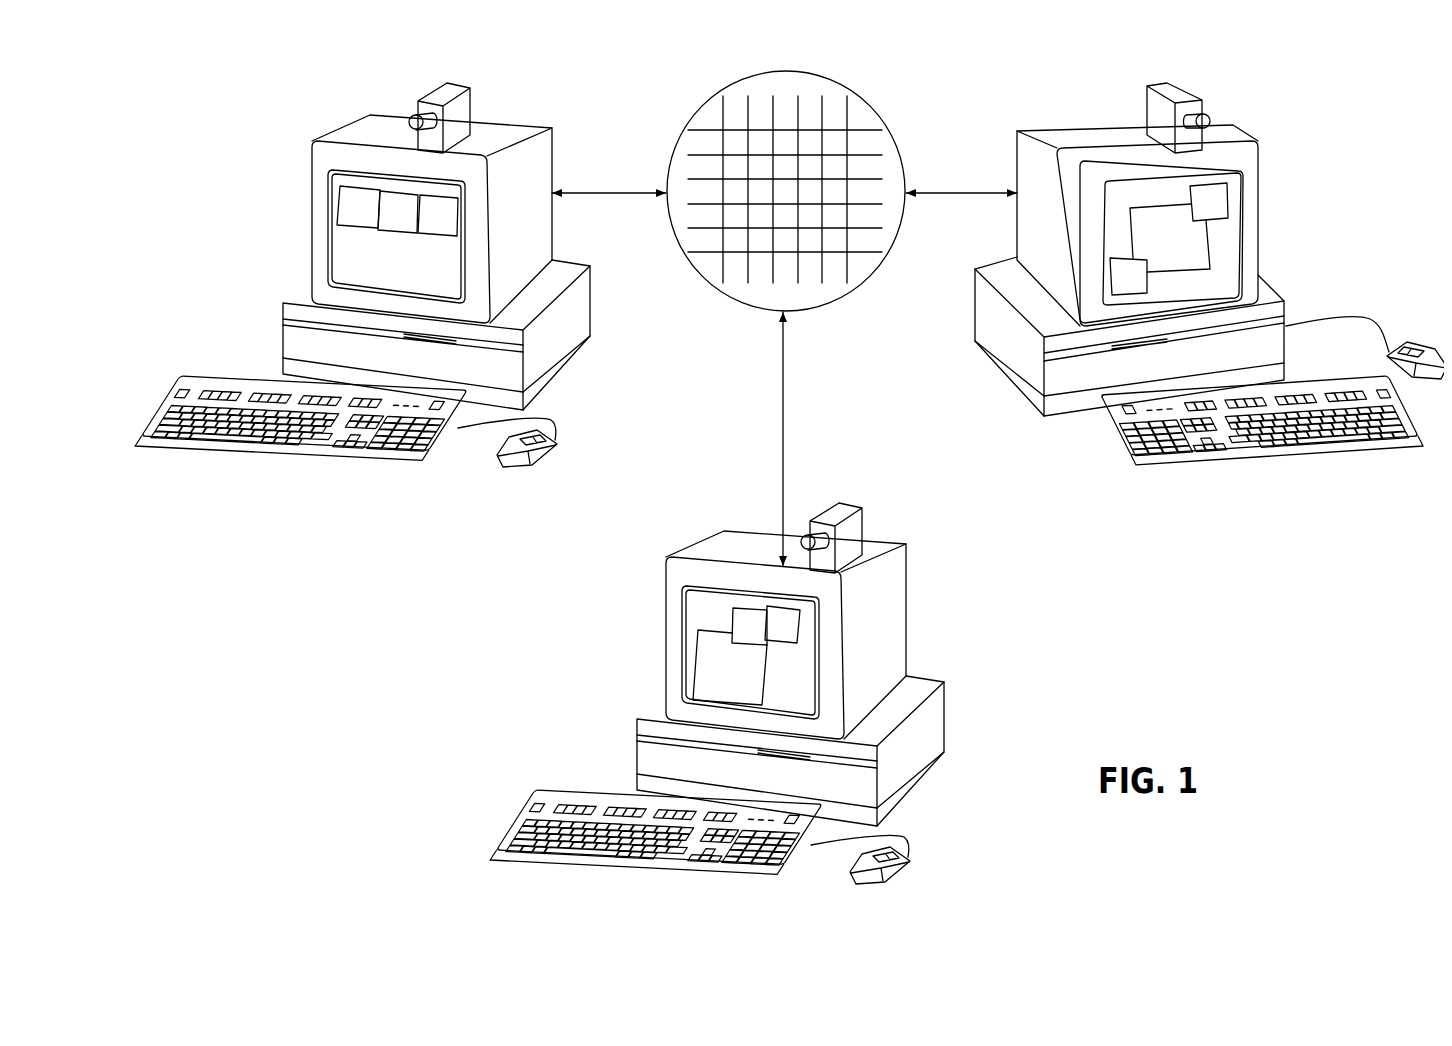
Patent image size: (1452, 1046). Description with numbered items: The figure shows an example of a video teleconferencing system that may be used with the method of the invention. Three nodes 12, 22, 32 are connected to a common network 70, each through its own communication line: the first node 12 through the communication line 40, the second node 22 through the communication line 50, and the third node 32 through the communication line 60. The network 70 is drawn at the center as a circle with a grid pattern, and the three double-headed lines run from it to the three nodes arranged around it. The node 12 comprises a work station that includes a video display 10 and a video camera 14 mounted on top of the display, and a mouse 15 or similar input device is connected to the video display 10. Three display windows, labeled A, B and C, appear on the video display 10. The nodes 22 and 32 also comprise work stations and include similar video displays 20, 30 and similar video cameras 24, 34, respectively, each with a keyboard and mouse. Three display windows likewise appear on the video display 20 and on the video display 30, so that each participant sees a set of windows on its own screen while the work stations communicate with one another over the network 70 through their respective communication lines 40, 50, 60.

The video display 10 is at (324, 136).
The node 12 is at (248, 161).
The video camera 14 is at (437, 85).
The mouse 15 is at (558, 438).
The video display 20 is at (678, 551).
The node 22 is at (572, 609).
The video camera 24 is at (850, 504).
The video display 30 is at (1093, 121).
The node 32 is at (1389, 221).
The video camera 34 is at (1165, 80).
The communication line 40 is at (625, 189).
The communication line 50 is at (780, 419).
The communication line 60 is at (973, 189).
The network 70 is at (715, 94).